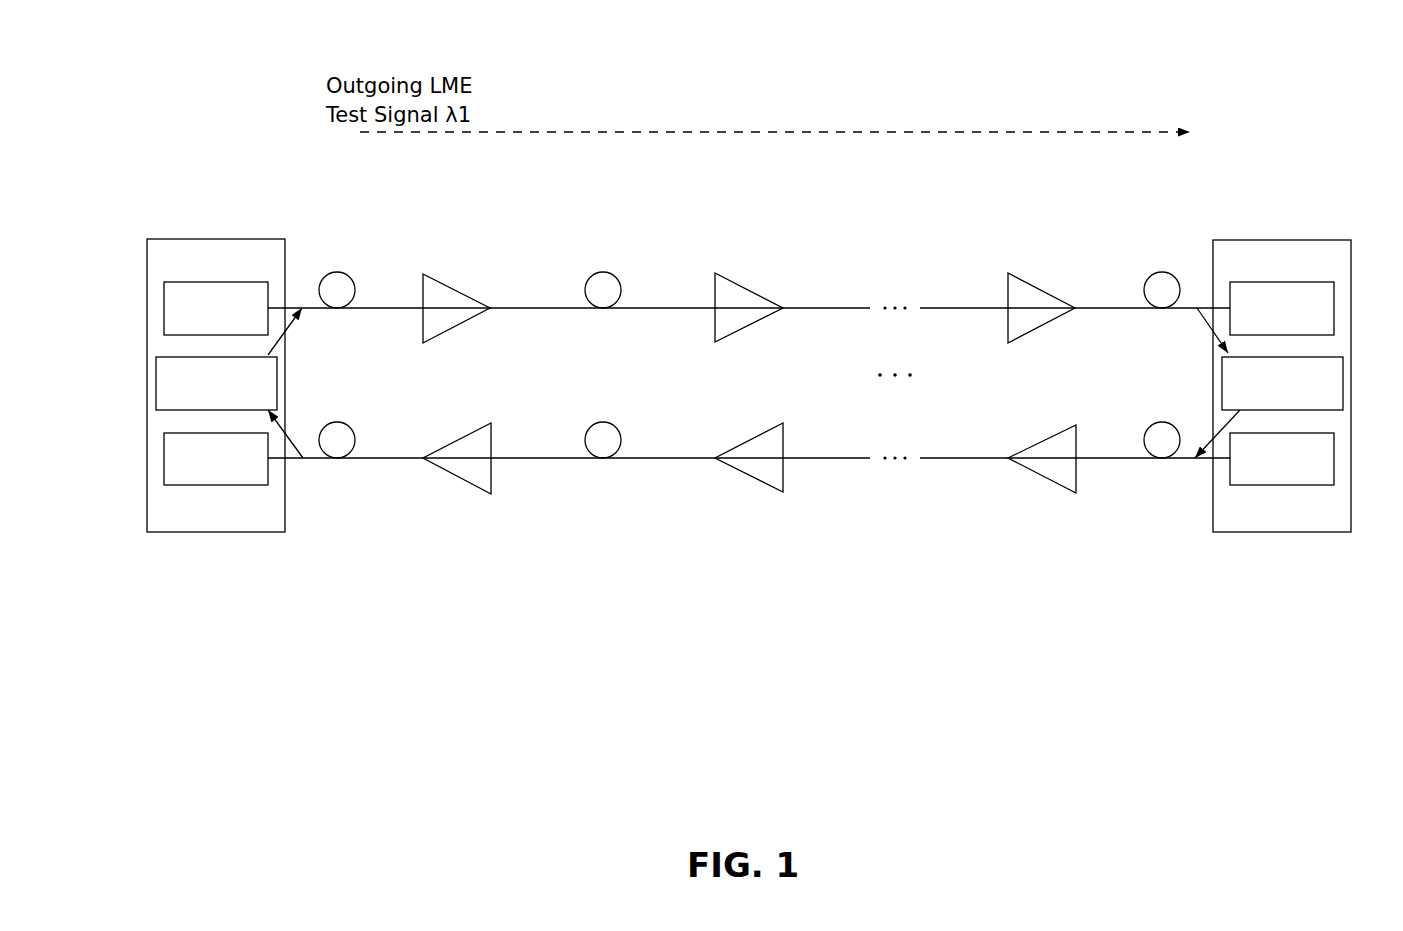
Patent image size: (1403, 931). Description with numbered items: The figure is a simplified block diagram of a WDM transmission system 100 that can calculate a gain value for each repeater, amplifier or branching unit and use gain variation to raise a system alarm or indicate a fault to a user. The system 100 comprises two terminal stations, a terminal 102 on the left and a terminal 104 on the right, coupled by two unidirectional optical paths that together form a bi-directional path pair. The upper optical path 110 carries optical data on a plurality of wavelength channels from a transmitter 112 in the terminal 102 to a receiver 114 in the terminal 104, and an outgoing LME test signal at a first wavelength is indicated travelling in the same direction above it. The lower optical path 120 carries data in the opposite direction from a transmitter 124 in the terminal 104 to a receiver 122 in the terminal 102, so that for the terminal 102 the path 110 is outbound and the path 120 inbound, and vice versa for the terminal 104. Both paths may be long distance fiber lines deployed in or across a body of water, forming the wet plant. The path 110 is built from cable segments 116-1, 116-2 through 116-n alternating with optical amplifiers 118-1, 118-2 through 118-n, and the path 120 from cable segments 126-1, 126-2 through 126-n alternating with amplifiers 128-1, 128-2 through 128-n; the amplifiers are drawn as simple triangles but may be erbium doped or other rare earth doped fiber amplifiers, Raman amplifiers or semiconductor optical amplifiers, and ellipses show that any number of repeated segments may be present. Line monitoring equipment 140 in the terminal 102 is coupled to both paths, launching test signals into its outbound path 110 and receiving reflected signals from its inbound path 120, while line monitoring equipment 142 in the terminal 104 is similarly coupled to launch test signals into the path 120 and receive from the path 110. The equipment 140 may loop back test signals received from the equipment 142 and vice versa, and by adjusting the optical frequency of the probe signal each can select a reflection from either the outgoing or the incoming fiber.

The WDM transmission system 100 is at (335, 170).
The terminal 102 is at (183, 239).
The terminal 104 is at (1228, 240).
The optical path 110 is at (597, 228).
The transmitter 112 is at (218, 282).
The receiver 114 is at (1302, 282).
The cable segment 116-1 is at (322, 310).
The cable segment 116-2 is at (542, 310).
The cable segment 116-n is at (1120, 310).
The optical amplifier 118-1 is at (448, 286).
The optical amplifier 118-2 is at (738, 284).
The optical amplifier 118-n is at (1030, 286).
The optical path 120 is at (610, 533).
The receiver 122 is at (195, 485).
The transmitter 124 is at (1283, 485).
The cable segment 126-1 is at (318, 458).
The cable segment 126-2 is at (548, 458).
The cable segment 126-n is at (1127, 458).
The optical amplifier 128-1 is at (456, 476).
The optical amplifier 128-2 is at (748, 476).
The optical amplifier 128-n is at (1040, 477).
The line monitoring equipment 140 is at (277, 380).
The line monitoring equipment 142 is at (1222, 387).